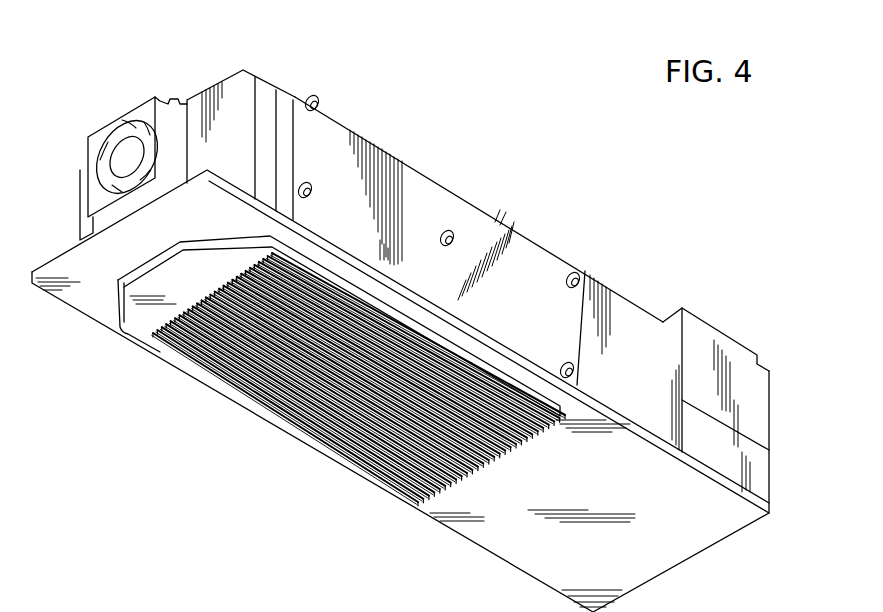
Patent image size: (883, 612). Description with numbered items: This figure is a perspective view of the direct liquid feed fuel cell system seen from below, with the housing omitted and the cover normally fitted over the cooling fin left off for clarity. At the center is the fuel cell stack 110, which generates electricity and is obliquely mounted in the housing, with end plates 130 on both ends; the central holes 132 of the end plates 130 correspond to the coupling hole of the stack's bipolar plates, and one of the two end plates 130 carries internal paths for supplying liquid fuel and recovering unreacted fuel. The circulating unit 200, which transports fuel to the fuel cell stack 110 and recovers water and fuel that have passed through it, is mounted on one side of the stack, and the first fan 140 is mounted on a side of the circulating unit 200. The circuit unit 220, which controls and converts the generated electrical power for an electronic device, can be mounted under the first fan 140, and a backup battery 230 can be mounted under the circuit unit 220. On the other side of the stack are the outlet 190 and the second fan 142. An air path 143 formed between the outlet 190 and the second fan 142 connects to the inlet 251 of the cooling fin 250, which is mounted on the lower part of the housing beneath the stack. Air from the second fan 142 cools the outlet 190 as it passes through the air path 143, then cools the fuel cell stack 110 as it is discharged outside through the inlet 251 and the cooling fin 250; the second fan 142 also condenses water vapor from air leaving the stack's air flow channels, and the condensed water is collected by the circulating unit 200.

The fuel cell stack 110 is at (512, 238).
The end plates 130 is at (400, 160).
The central holes 132 is at (450, 232).
The first fan 140 is at (712, 345).
The second fan 142 is at (104, 131).
The air path 143 is at (263, 92).
The outlet 190 is at (283, 100).
The circulating unit 200 is at (640, 300).
The circuit unit 220 is at (762, 421).
The backup battery 230 is at (762, 470).
The cooling fin 250 is at (230, 380).
The inlet 251 is at (135, 277).